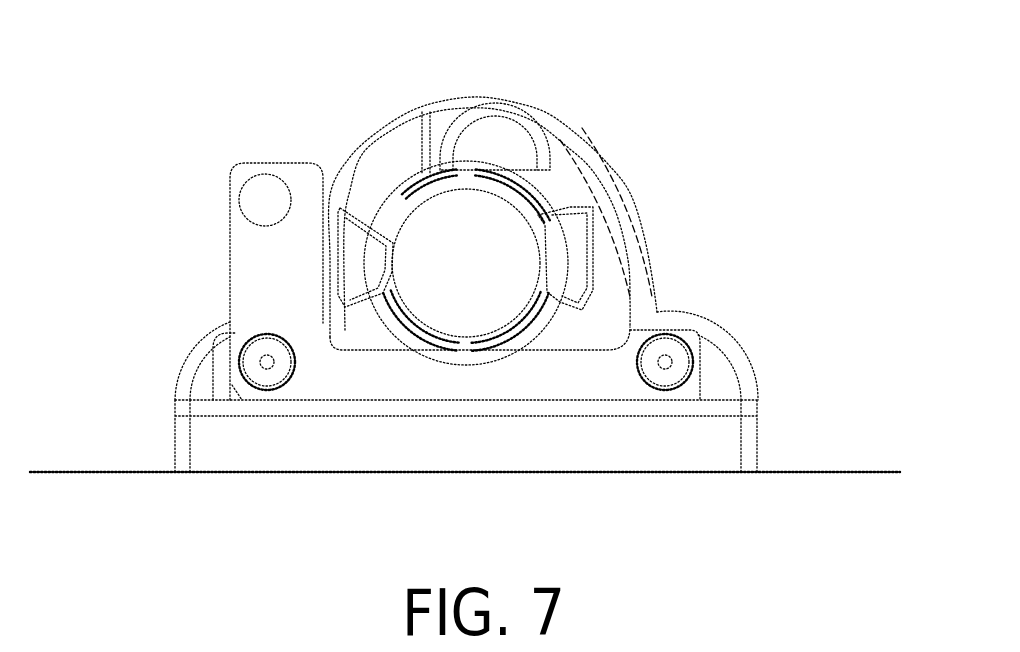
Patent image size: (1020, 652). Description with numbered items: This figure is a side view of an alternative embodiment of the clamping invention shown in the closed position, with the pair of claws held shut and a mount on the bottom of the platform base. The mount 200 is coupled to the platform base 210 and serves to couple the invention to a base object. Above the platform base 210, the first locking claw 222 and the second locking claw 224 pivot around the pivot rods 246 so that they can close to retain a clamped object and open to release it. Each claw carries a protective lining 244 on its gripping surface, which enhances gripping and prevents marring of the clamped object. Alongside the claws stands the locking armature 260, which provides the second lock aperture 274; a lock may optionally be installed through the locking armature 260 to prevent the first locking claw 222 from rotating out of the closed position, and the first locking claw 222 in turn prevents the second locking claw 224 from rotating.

The mount 200 is at (803, 475).
The platform base 210 is at (603, 427).
The first locking claw 222 is at (410, 160).
The second locking claw 224 is at (487, 140).
The protective lining 244 is at (390, 243).
The pivot rods 246 is at (637, 367).
The locking armature 260 is at (260, 258).
The second lock aperture 274 is at (243, 180).